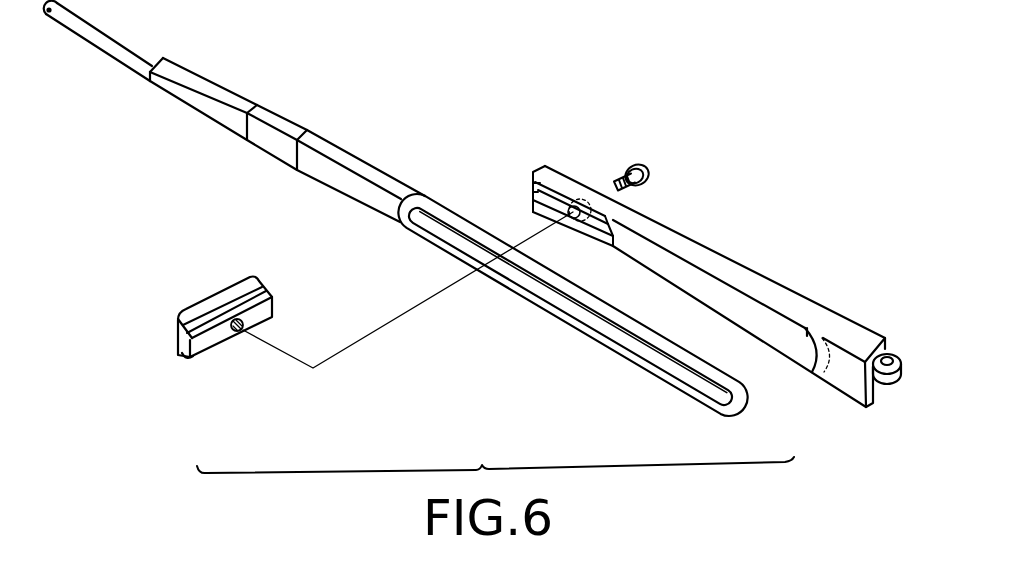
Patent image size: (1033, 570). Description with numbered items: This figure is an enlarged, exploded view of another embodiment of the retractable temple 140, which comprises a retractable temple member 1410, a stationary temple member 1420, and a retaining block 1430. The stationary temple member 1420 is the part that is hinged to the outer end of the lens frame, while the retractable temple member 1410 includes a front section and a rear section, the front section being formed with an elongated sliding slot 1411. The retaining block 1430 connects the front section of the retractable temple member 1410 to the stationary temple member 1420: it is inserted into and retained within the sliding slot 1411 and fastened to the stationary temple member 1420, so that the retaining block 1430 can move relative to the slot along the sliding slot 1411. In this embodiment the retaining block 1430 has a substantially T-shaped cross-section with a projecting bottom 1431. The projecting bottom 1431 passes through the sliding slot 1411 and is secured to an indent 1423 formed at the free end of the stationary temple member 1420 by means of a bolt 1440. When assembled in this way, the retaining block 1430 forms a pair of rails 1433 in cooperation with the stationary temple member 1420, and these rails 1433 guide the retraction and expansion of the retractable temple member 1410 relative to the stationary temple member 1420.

The retractable temple 140 is at (548, 112).
The retractable temple member 1410 is at (201, 112).
The sliding slot 1411 is at (623, 340).
The stationary temple member 1420 is at (715, 258).
The indent 1423 is at (533, 190).
The bolt 1440 is at (648, 163).
The retaining block 1430 is at (222, 352).
The projecting bottom 1431 is at (268, 307).
The rails 1433 is at (222, 305).